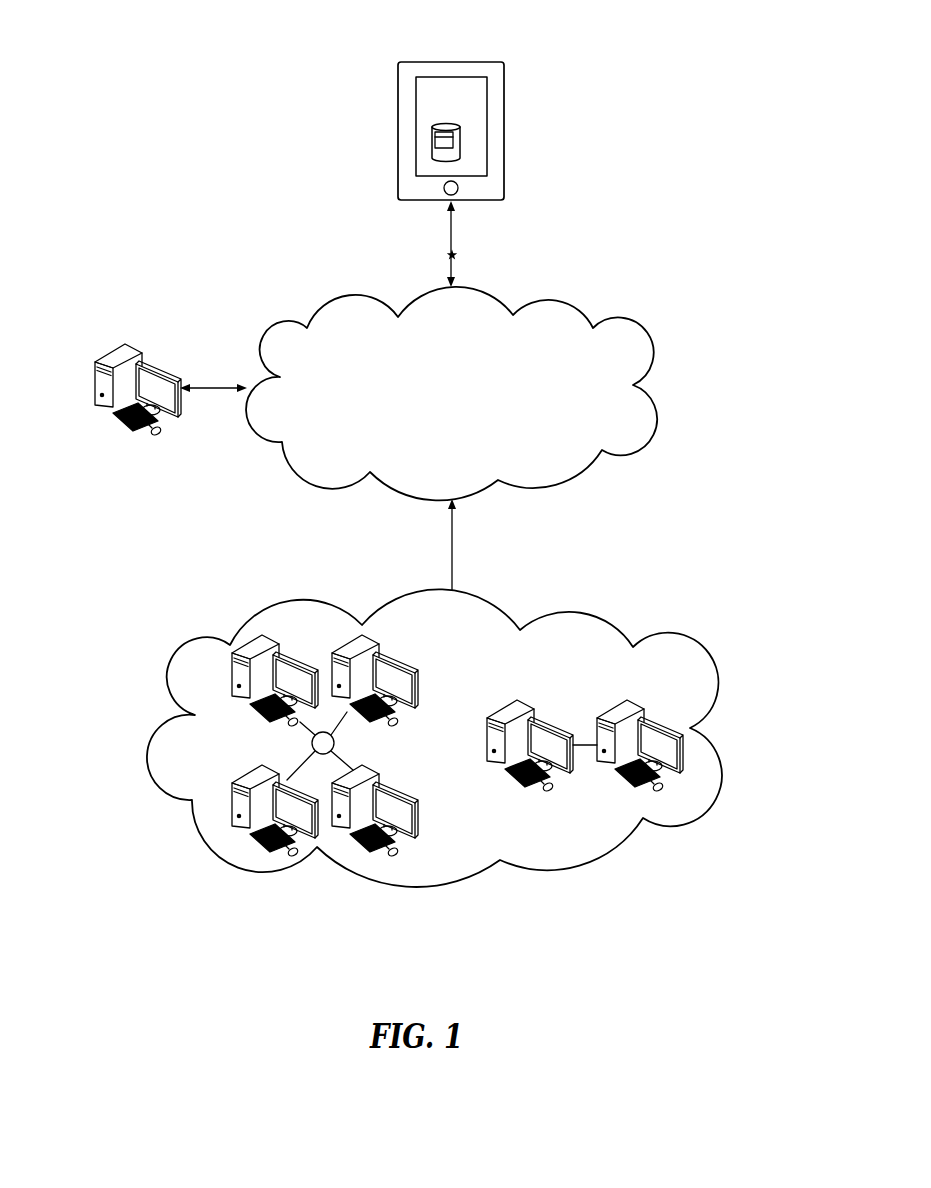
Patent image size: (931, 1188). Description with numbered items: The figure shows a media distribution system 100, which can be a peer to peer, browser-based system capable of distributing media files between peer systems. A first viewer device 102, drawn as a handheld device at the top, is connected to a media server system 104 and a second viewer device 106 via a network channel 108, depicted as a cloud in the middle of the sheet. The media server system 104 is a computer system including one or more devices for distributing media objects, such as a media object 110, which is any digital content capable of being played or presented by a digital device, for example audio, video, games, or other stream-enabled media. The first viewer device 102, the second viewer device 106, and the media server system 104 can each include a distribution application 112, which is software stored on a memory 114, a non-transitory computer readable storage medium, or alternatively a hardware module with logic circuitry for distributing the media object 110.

The media distribution system 100 is at (82, 104).
The first viewer device 102 is at (500, 116).
The media server system 104 is at (688, 652).
The second viewer device 106 is at (95, 370).
The network channel 108 is at (466, 401).
The media object 110 is at (460, 253).
The distribution application 112 is at (453, 138).
The memory 114 is at (498, 97).